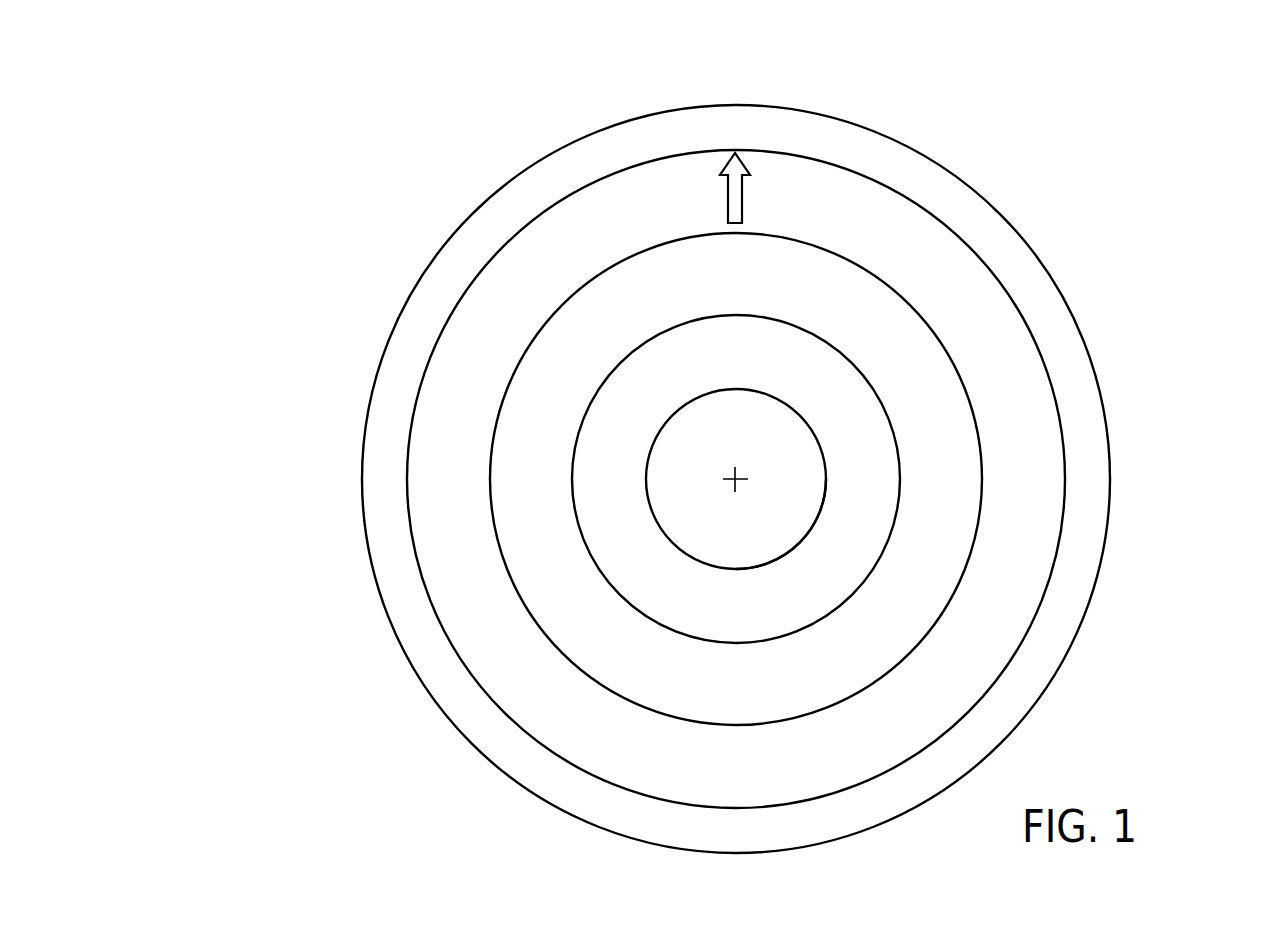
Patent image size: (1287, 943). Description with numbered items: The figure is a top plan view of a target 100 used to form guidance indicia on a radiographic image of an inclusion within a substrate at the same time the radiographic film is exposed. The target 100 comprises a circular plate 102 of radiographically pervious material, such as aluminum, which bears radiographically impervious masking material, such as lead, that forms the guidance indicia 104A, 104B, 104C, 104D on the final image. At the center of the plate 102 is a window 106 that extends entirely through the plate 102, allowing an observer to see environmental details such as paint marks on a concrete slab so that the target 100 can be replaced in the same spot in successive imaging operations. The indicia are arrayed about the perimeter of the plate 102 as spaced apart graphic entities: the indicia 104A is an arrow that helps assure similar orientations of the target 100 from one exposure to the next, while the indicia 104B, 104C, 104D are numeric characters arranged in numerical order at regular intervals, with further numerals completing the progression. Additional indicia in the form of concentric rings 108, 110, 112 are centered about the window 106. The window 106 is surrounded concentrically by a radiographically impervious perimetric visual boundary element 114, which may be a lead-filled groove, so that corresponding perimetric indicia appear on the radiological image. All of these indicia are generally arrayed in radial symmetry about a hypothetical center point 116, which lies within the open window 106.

The target 100 is at (433, 106).
The plate 102 is at (378, 381).
The arrow indicia 104A is at (748, 182).
The numeric character indicia 104B is at (878, 206).
The numeric character indicia 104C is at (1010, 327).
The numeric character indicia 104D is at (1035, 481).
The window 106 is at (757, 392).
The concentric ring 108 is at (900, 437).
The concentric ring 110 is at (975, 413).
The concentric ring 112 is at (1007, 290).
The perimetric visual boundary element 114 is at (798, 547).
The center point 116 is at (746, 494).